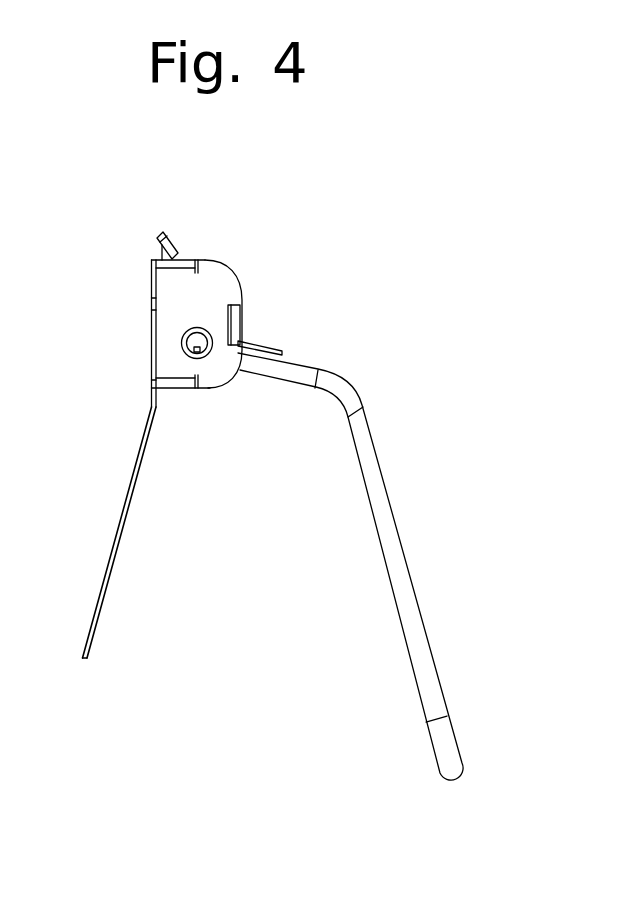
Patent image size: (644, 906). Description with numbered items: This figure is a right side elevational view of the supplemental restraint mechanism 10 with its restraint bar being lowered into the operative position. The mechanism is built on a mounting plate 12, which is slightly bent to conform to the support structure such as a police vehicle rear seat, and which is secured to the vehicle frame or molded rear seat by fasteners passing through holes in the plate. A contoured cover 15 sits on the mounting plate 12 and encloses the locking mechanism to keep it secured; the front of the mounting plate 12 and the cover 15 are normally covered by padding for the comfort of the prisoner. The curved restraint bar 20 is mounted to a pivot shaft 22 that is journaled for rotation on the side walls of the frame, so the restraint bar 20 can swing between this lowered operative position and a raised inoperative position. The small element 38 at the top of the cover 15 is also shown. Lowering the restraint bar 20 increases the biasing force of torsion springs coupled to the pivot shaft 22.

The supplemental restraint mechanism 10 is at (418, 270).
The mounting plate 12 is at (122, 533).
The cover 15 is at (203, 283).
The restraint bar 20 is at (395, 589).
The pivot shaft 22 is at (202, 350).
The hook 38 is at (167, 237).